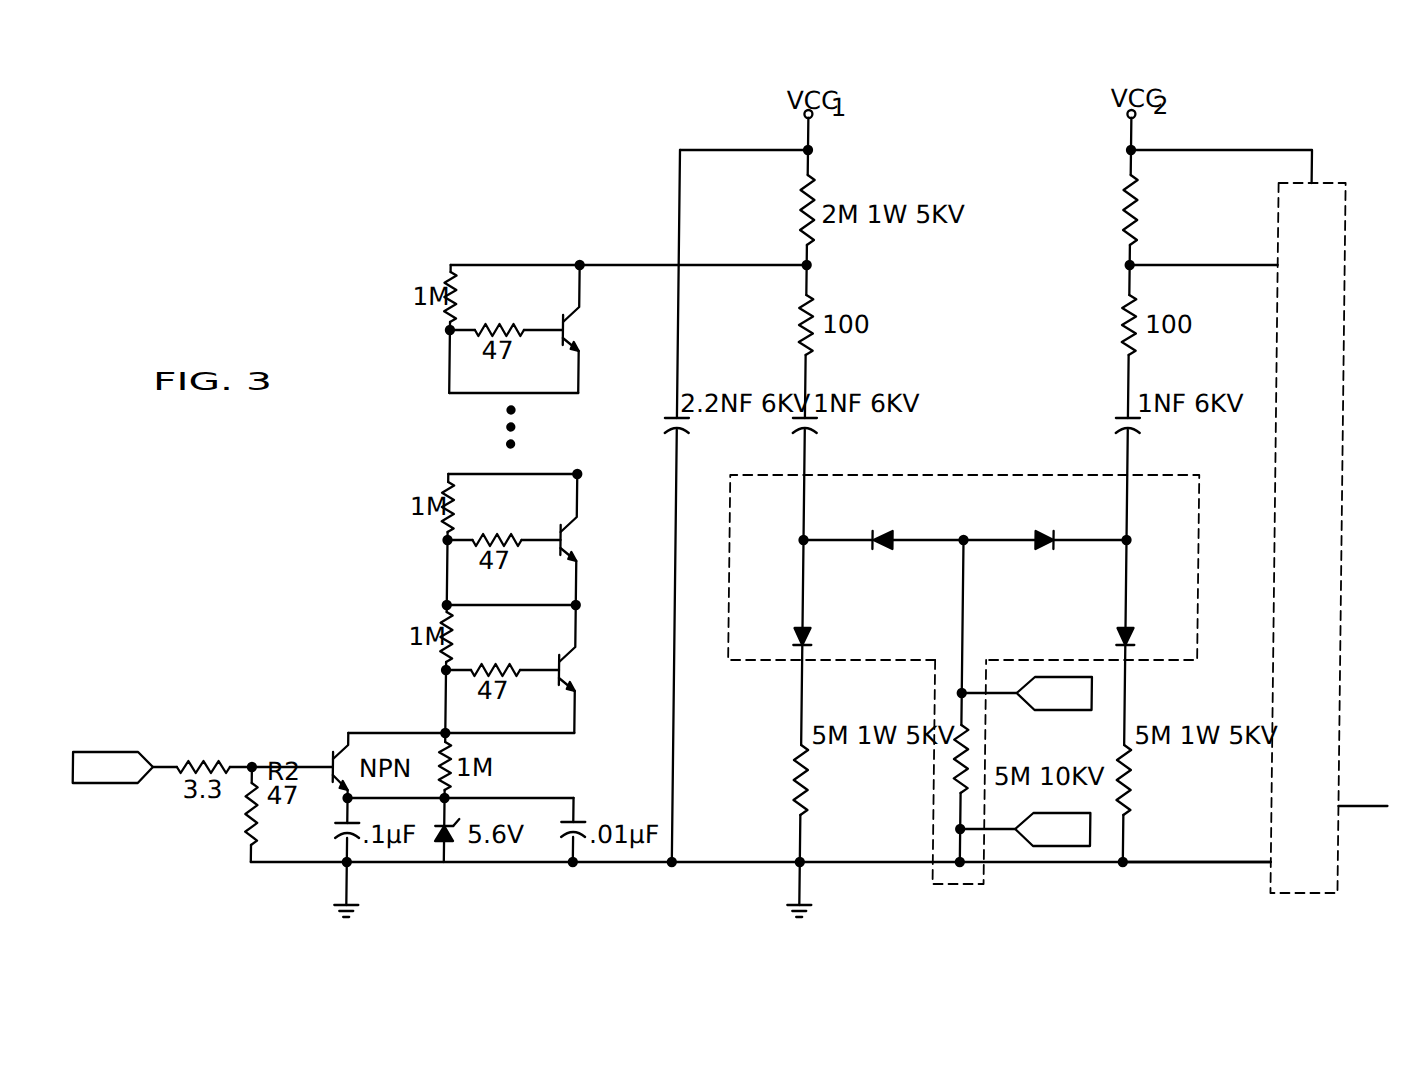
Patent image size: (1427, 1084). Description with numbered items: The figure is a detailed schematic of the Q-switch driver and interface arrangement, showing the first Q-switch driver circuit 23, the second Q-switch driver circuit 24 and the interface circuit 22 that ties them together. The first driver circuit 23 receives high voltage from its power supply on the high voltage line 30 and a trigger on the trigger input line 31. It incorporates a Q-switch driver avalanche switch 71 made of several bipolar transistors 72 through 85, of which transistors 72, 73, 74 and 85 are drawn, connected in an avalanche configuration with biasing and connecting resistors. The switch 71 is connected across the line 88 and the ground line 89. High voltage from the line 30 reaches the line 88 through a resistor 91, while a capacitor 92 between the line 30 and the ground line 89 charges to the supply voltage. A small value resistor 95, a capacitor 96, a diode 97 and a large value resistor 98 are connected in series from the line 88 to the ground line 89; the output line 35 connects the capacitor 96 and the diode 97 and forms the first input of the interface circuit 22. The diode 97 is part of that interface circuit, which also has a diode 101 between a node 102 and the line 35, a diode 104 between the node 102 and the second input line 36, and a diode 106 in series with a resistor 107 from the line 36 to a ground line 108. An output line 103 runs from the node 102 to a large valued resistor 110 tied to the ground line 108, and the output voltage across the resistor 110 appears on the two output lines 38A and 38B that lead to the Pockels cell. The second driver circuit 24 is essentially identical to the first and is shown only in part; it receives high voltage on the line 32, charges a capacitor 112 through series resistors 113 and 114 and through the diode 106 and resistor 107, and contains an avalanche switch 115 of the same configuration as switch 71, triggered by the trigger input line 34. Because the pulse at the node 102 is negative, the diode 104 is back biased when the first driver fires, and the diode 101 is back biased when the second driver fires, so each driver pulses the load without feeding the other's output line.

The interface circuit 22 is at (964, 541).
The first Q-switch driver circuit 23 is at (485, 514).
The second Q-switch driver circuit 24 is at (1341, 491).
The high voltage line 30 is at (804, 148).
The trigger input line 31 is at (172, 769).
The high voltage line 32 is at (1127, 146).
The trigger input line 34 is at (1350, 804).
The output line 35 is at (810, 473).
The output line 36 is at (1127, 470).
The output line 38A is at (1010, 697).
The output line 38B is at (1010, 833).
The Q-switch driver avalanche switch 71 is at (511, 295).
The bipolar transistor 72 is at (338, 751).
The bipolar transistor 73 is at (562, 659).
The bipolar transistor 74 is at (562, 529).
The bipolar transistor 85 is at (562, 319).
The line 88 is at (622, 262).
The ground line 89 is at (642, 864).
The resistor 91 is at (802, 220).
The capacitor 92 is at (662, 402).
The resistor 95 is at (802, 328).
The capacitor 96 is at (800, 434).
The diode 97 is at (802, 632).
The resistor 98 is at (810, 790).
The diode 101 is at (884, 531).
The node 102 is at (964, 536).
The output line 103 is at (970, 625).
The diode 104 is at (1043, 531).
The diode 106 is at (1136, 633).
The resistor 107 is at (1134, 790).
The ground line 108 is at (1090, 866).
The resistor 110 is at (960, 757).
The capacitor 112 is at (1117, 417).
The resistor 113 is at (1124, 212).
The resistor 114 is at (1124, 324).
The avalanche switch 115 is at (1348, 454).